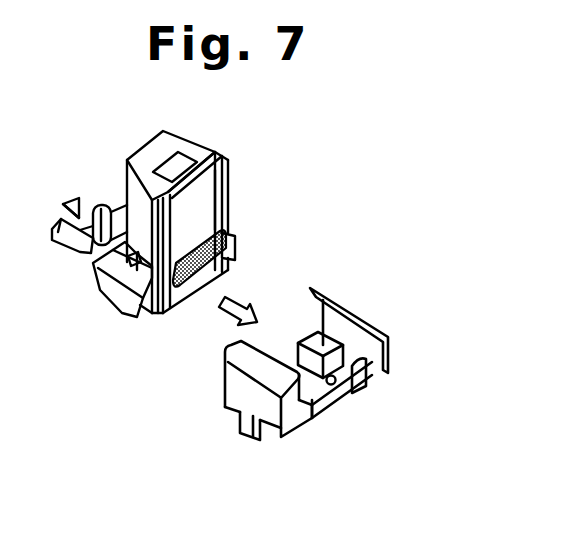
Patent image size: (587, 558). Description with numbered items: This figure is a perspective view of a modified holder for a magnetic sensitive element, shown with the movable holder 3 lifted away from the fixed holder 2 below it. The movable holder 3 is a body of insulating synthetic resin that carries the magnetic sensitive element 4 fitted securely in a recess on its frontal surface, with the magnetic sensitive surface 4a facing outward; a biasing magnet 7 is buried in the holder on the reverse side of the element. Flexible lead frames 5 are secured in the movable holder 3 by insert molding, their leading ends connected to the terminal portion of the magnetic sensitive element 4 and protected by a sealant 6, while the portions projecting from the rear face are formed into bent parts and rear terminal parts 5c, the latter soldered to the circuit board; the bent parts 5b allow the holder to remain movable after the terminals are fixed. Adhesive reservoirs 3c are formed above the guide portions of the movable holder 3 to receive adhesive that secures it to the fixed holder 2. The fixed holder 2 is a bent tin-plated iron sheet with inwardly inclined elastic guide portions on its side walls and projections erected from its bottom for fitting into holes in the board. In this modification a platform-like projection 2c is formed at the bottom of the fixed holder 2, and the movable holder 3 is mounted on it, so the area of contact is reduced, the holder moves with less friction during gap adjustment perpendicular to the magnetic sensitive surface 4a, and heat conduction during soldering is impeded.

The fixed holder 2 is at (396, 352).
The platform-like projection 2c is at (336, 385).
The movable holder 3 is at (149, 148).
The adhesive reservoirs 3c is at (137, 287).
The magnetic sensitive element 4 is at (222, 160).
The magnetic sensitive surface 4a is at (213, 201).
The lead frames 5 is at (110, 250).
The bent parts 5b is at (99, 200).
The rear terminal parts 5c is at (73, 216).
The sealant 6 is at (225, 247).
The biasing magnet 7 is at (183, 163).